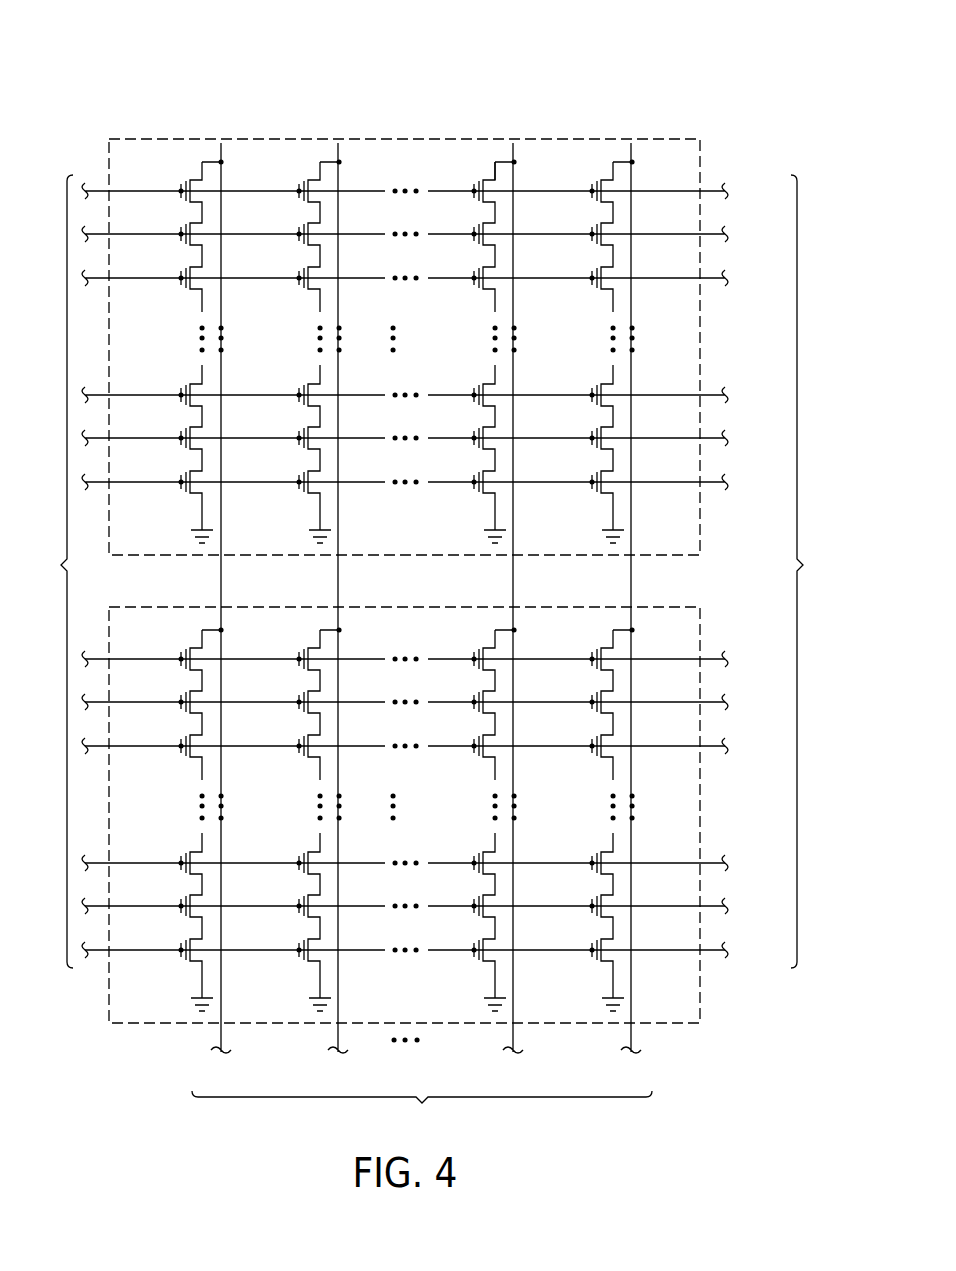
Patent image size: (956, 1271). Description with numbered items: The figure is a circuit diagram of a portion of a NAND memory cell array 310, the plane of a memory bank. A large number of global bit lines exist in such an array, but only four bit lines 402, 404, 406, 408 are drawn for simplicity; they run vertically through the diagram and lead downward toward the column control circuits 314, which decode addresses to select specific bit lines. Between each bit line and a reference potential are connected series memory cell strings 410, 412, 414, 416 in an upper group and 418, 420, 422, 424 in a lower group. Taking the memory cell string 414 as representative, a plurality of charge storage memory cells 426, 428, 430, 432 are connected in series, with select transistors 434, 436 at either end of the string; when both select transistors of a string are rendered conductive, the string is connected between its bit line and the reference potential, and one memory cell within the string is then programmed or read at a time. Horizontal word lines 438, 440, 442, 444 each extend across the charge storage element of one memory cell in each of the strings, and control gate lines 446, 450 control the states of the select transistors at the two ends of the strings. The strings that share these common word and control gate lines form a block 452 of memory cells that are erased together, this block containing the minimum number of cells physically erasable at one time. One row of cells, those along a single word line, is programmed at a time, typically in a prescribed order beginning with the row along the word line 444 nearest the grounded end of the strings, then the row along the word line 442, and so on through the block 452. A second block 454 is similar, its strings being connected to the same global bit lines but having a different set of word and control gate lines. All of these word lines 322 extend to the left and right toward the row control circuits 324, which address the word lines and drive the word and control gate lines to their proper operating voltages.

The memory cell array 310 is at (140, 103).
The global bit line 402 is at (222, 180).
The global bit line 404 is at (339, 180).
The global bit line 406 is at (514, 180).
The global bit line 408 is at (633, 180).
The memory cell string 410 is at (186, 372).
The memory cell string 412 is at (305, 372).
The memory cell string 414 is at (478, 372).
The memory cell string 416 is at (596, 372).
The memory cell string 418 is at (186, 840).
The memory cell string 420 is at (305, 840).
The memory cell string 422 is at (478, 840).
The memory cell string 424 is at (596, 840).
The charge storage memory cell 426 is at (478, 228).
The charge storage memory cell 428 is at (478, 270).
The charge storage memory cell 430 is at (476, 390).
The charge storage memory cell 432 is at (476, 432).
The select transistor 434 is at (478, 477).
The select transistor 436 is at (485, 180).
The word line 438 is at (708, 233).
The word line 440 is at (708, 277).
The word line 442 is at (708, 394).
The word line 444 is at (708, 437).
The control gate line 446 is at (708, 190).
The control gate line 450 is at (708, 481).
The block 452 is at (380, 130).
The second block 454 is at (487, 1033).
The word lines 322 is at (47, 571).
The row control circuits 324 is at (810, 571).
The column control circuits 314 is at (422, 1114).